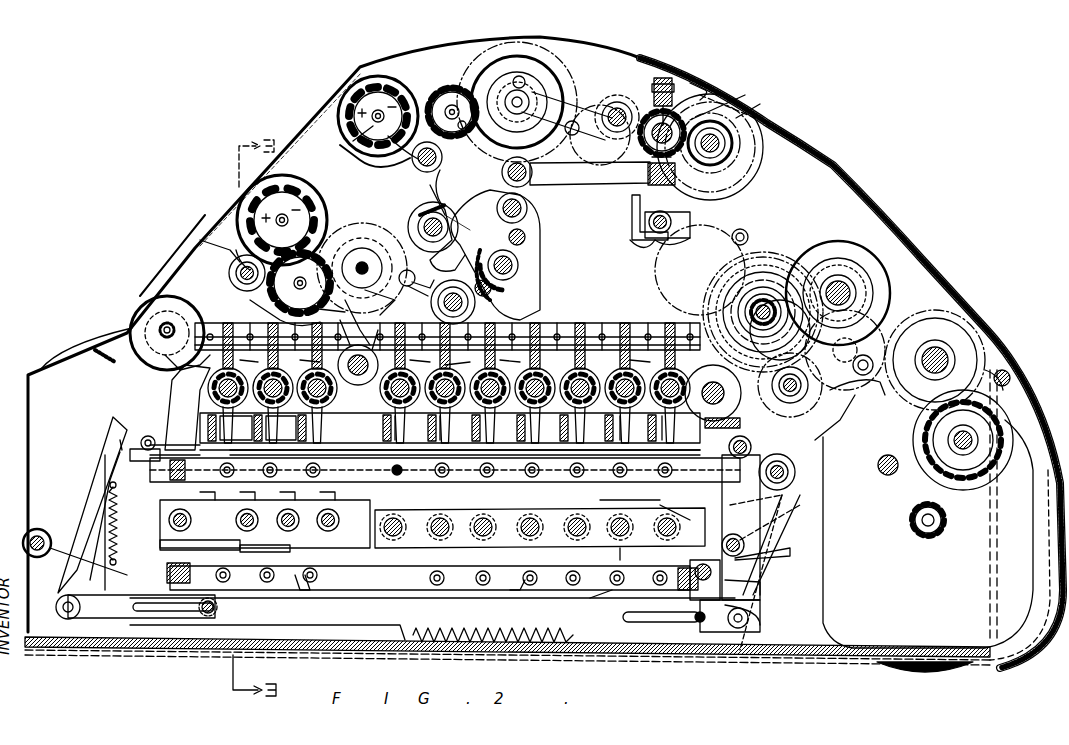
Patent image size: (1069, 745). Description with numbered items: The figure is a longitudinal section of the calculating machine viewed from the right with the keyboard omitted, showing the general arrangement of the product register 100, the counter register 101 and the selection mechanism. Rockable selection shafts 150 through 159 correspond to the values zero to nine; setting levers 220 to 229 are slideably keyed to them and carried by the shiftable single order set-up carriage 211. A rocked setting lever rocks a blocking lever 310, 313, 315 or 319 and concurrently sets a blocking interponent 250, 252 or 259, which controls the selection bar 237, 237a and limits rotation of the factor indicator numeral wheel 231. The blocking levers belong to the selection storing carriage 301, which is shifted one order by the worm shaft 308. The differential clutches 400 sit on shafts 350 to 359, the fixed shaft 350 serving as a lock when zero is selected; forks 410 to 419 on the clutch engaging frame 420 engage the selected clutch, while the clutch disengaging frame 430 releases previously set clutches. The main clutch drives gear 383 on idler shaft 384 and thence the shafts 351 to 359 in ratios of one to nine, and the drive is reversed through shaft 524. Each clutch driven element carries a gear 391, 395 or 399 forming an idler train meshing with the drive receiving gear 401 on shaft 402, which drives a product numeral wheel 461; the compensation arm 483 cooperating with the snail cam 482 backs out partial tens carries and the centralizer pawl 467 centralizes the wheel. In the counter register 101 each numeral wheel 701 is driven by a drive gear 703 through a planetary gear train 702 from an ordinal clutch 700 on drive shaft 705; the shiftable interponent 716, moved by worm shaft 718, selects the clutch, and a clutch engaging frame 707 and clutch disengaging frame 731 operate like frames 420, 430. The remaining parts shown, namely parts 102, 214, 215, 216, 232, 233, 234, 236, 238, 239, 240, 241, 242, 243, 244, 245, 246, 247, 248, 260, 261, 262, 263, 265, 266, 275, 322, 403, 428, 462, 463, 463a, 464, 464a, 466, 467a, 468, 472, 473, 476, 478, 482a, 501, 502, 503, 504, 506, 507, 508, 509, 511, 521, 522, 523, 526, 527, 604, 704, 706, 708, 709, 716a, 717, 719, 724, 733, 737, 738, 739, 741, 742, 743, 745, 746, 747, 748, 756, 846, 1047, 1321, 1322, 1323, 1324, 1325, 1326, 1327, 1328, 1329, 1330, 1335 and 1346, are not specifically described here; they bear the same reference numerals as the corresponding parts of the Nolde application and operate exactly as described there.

The product register 100 is at (232, 180).
The counter register 101 is at (374, 56).
The left housing section 102 is at (140, 300).
The selection shaft 150 is at (200, 547).
The selection shaft 159 is at (638, 551).
The single order set-up carriage 211 is at (366, 529).
The lever 214 is at (108, 455).
The pin 215 is at (748, 510).
The lever 216 is at (370, 508).
The setting lever 220 is at (202, 471).
The setting lever 229 is at (630, 501).
The factor indicator numeral wheel 231 is at (200, 300).
The pinion 232 is at (155, 330).
The arm 233 is at (160, 372).
The link 234 is at (95, 452).
The pivot 236 is at (148, 440).
The selection bar 237 is at (66, 615).
The selection bar 237a is at (250, 614).
The plate 238 is at (405, 614).
The link 239 is at (784, 486).
The pivot 240 is at (782, 466).
The arm 241 is at (768, 548).
The lever 242 is at (785, 570).
The block 243 is at (710, 580).
The link 244 is at (770, 516).
The arm 245 is at (750, 580).
The arm 246 is at (677, 508).
The pivot 247 is at (750, 615).
The spring 248 is at (760, 600).
The blocking interponent 250 is at (263, 547).
The blocking interponent 252 is at (225, 568).
The blocking interponent 259 is at (608, 598).
The spring 260 is at (462, 598).
The lug 261 is at (305, 590).
The arm 262 is at (525, 598).
The block 263 is at (160, 575).
The pin 265 is at (208, 612).
The slot 266 is at (155, 612).
The spring 275 is at (102, 530).
The selection storing carriage 301 is at (445, 470).
The worm shaft 308 is at (744, 460).
The blocking lever 310 is at (210, 452).
The blocking lever 313 is at (410, 429).
The blocking lever 315 is at (495, 452).
The blocking lever 319 is at (636, 429).
The rod 322 is at (125, 465).
The fixed shaft 350 is at (205, 385).
The actuator shaft 351 is at (285, 428).
The actuator shaft 359 is at (712, 372).
The gear 383 is at (730, 410).
The idler shaft 384 is at (726, 390).
The gear 391 is at (255, 368).
The gear 395 is at (510, 368).
The gear 399 is at (643, 368).
The differential clutch 400 is at (430, 380).
The drive receiving gear 401 is at (362, 386).
The shaft 402 is at (420, 368).
The bracket 403 is at (456, 429).
The fork 410 is at (238, 428).
The fork 419 is at (678, 429).
The clutch engaging frame 420 is at (433, 439).
The shaft 428 is at (752, 450).
The clutch disengaging frame 430 is at (606, 324).
The numeral wheel 461 is at (322, 185).
The shaft 462 is at (288, 212).
The gear 463 is at (320, 205).
The arm 463a is at (330, 312).
The gear 464 is at (300, 265).
The wheel 464a is at (298, 368).
The arm 466 is at (240, 255).
The centralizer pawl 467 is at (205, 245).
The arm 467a is at (262, 308).
The disc 468 is at (238, 284).
The shaft 472 is at (236, 270).
The shaft 473 is at (360, 274).
The shaft 476 is at (422, 226).
The arm 478 is at (375, 330).
The numeral wheel snail cam 482 is at (398, 276).
The cam 482a is at (358, 240).
The compensation arm 483 is at (392, 296).
The housing 501 is at (1010, 560).
The gear 502 is at (912, 518).
The gear 503 is at (920, 490).
The disc 504 is at (960, 437).
The shaft 506 is at (950, 442).
The arm 507 is at (967, 340).
The shaft 508 is at (934, 340).
The disc 509 is at (900, 312).
The shaft 511 is at (840, 280).
The disc 521 is at (862, 240).
The disc 522 is at (780, 270).
The arm 523 is at (848, 405).
The shaft 524 is at (818, 408).
The pin 526 is at (876, 372).
The arm 527 is at (878, 378).
The pin 604 is at (878, 467).
The ordinal clutch 700 is at (680, 70).
The numeral wheel 701 is at (350, 92).
The planetary gear train 702 is at (572, 78).
The drive gear 703 is at (722, 100).
The shaft 704 is at (708, 125).
The drive shaft 705 is at (730, 168).
The gear 706 is at (655, 148).
The clutch engaging frame 707 is at (665, 213).
The bar 708 is at (577, 170).
The shaft 709 is at (522, 167).
The shiftable interponent 716 is at (630, 202).
The arm 716a is at (640, 240).
The disc 717 is at (690, 220).
The worm shaft 718 is at (672, 236).
The bracket 719 is at (640, 222).
The pin 724 is at (522, 98).
The clutch disengaging frame 731 is at (725, 62).
The bolt 733 is at (664, 76).
The shaft 737 is at (645, 86).
The disc 738 is at (748, 155).
The disc 739 is at (752, 180).
The disc 741 is at (786, 278).
The disc 742 is at (790, 315).
The disc 743 is at (790, 295).
The pin 745 is at (748, 240).
The disc 746 is at (745, 330).
The disc 747 is at (770, 340).
The pin 748 is at (860, 325).
The link 756 is at (588, 110).
The gear 846 is at (750, 300).
The arm 1047 is at (762, 108).
The sector 1321 is at (528, 250).
The shaft 1322 is at (530, 206).
The pin 1323 is at (496, 288).
The shaft 1324 is at (488, 305).
The pin 1325 is at (528, 232).
The plate 1326 is at (560, 258).
The shaft 1327 is at (470, 302).
The shaft 1328 is at (450, 165).
The link 1329 is at (445, 212).
The arm 1330 is at (432, 205).
The spring 1335 is at (425, 226).
The disc 1346 is at (130, 310).